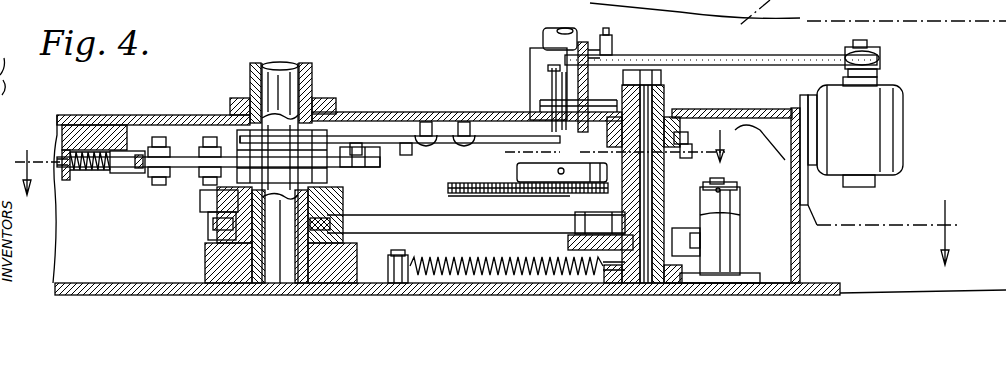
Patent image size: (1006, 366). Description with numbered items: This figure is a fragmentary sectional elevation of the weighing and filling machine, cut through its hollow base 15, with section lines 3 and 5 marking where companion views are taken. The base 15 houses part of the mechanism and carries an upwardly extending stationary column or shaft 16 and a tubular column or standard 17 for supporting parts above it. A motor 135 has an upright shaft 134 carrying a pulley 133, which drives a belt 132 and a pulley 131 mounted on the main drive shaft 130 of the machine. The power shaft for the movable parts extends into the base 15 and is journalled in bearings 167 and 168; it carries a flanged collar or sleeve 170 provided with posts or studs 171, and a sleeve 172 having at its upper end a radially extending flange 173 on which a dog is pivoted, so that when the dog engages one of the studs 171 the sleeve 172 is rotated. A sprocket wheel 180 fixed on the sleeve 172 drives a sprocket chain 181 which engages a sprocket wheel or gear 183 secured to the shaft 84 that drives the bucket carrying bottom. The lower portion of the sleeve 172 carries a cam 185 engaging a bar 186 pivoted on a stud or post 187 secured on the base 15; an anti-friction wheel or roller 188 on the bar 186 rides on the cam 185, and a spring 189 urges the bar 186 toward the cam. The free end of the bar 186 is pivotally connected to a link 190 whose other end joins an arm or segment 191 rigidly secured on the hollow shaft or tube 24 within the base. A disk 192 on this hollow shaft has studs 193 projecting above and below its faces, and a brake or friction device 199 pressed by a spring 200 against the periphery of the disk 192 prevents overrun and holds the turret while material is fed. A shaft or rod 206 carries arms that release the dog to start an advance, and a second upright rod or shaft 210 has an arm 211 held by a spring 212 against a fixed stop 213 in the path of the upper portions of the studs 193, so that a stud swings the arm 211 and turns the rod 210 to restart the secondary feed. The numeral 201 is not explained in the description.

The section line 3- 3 is at (496, 199).
The section line 5- 5 is at (611, 147).
The base 15 is at (165, 108).
The stationary column or shaft 16 is at (278, 65).
The tubular column or standard 17 is at (530, 58).
The hollow shaft or tube 24 is at (312, 68).
The shaft 84 is at (543, 38).
The main drive shaft 130 is at (665, 42).
The pulley 131 is at (720, 52).
The belt 132 is at (880, 72).
The pulley 133 is at (880, 56).
The upright shaft 134 is at (870, 42).
The motor 135 is at (903, 110).
The bearing 167 is at (662, 88).
The bearing 168 is at (760, 268).
The flanged collar or sleeve 170 is at (680, 125).
The posts or studs 171 is at (699, 144).
The sleeve 172 is at (715, 218).
The radially extending flange 173 is at (715, 130).
The sprocket wheel 180 is at (761, 142).
The sprocket chain 181 is at (510, 172).
The sprocket wheel or gear 183 is at (450, 186).
The cam 185 is at (568, 240).
The bar 186 is at (575, 207).
The stud or post 187 is at (728, 180).
The anti-friction wheel or roller 188 is at (700, 240).
The spring 189 is at (468, 255).
The link 190 is at (370, 232).
The arm or segment 191 is at (220, 205).
The disk 192 is at (190, 180).
The studs 193 is at (207, 135).
The brake or friction device 199 is at (118, 175).
The spring 200 is at (88, 172).
The sleeve 201 is at (639, 184).
The shaft or rod 206 is at (600, 60).
The upright rod or shaft 210 is at (550, 80).
The arm 211 is at (375, 135).
The spring 212 is at (478, 104).
The fixed stop 213 is at (425, 122).